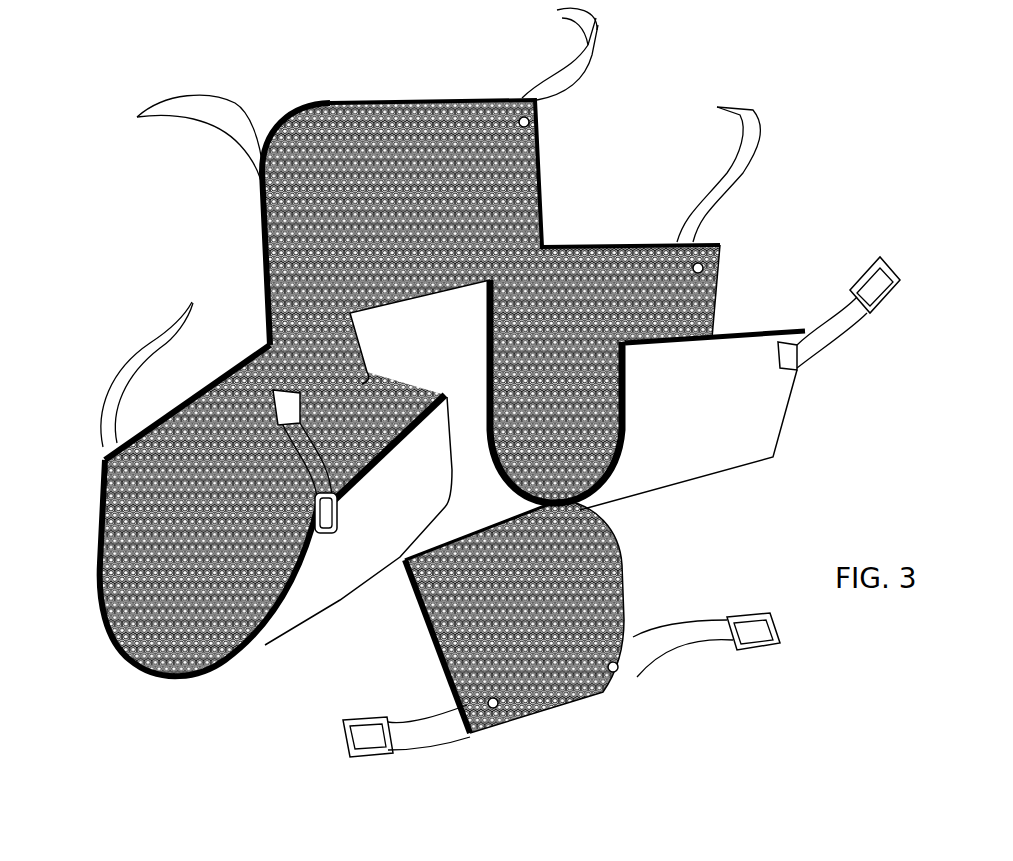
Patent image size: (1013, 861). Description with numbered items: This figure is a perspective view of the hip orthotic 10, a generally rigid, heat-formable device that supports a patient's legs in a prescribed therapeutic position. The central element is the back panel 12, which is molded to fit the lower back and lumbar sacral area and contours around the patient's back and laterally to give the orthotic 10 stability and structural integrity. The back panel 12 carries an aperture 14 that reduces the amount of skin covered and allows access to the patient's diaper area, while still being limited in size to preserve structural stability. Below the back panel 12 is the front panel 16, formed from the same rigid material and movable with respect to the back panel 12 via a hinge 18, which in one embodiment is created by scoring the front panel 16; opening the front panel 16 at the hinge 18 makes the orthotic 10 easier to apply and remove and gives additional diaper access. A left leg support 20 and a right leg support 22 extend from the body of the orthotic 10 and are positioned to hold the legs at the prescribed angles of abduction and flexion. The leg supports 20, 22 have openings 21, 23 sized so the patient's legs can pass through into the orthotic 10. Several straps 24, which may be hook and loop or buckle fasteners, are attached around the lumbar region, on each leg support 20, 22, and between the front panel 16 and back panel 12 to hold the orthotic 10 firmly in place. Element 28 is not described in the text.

The hip orthotic 10 is at (708, 45).
The back panel 12 is at (416, 100).
The aperture 14 is at (268, 283).
The front panel 16 is at (624, 580).
The hinge 18 is at (432, 603).
The left leg support 20 is at (760, 442).
The opening 21 is at (713, 317).
The right leg support 22 is at (314, 620).
The opening 23 is at (110, 622).
The straps 24 is at (874, 253).
The edge binding of main body 28 is at (278, 232).